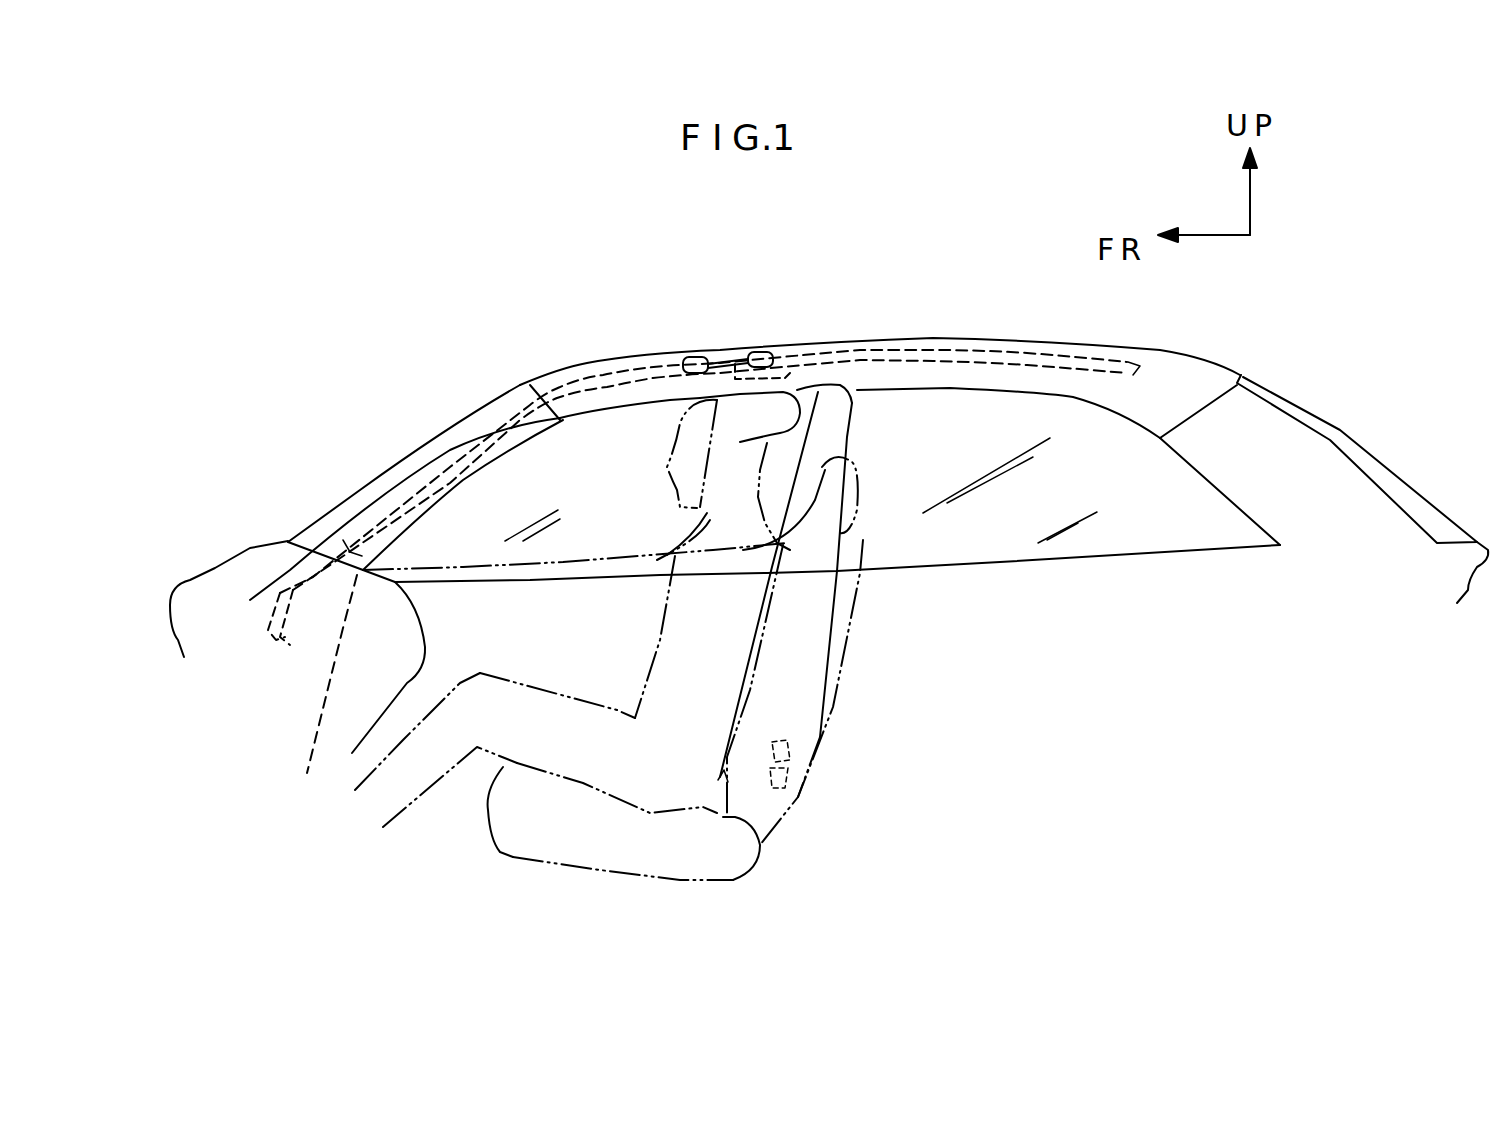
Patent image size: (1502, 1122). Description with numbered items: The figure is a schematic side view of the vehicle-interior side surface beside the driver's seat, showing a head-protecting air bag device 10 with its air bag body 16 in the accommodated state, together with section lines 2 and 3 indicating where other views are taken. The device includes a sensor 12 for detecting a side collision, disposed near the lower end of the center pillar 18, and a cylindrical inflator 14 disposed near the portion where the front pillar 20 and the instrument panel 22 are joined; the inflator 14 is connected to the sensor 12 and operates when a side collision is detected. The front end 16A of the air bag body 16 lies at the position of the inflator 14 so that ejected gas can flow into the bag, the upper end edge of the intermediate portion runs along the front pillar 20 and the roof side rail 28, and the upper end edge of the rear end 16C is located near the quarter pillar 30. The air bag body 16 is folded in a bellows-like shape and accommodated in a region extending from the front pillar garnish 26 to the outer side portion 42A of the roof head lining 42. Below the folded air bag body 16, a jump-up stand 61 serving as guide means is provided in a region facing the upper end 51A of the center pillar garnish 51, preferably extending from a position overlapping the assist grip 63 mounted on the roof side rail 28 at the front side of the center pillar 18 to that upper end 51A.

The section line II-II 2 is at (845, 385).
The section line III-III 3 is at (627, 353).
The head-protecting air bag device 10 is at (898, 333).
The sensor 12 is at (797, 757).
The inflator 14 is at (310, 600).
The air bag body 16 is at (1022, 352).
The front end 16A is at (360, 570).
The rear end 16C is at (1138, 368).
The center pillar 18 is at (850, 434).
The front pillar 20 is at (492, 407).
The instrument panel 22 is at (425, 637).
The front pillar garnish 26 is at (505, 440).
The roof side rail 28 is at (950, 336).
The quarter pillar 30 is at (1198, 478).
The roof head lining 42 is at (605, 422).
The outer side portion 42A is at (597, 358).
The center pillar garnish 51 is at (850, 398).
The upper end 51A is at (745, 395).
The jump-up stand 61 is at (790, 380).
The assist grip 63 is at (695, 360).